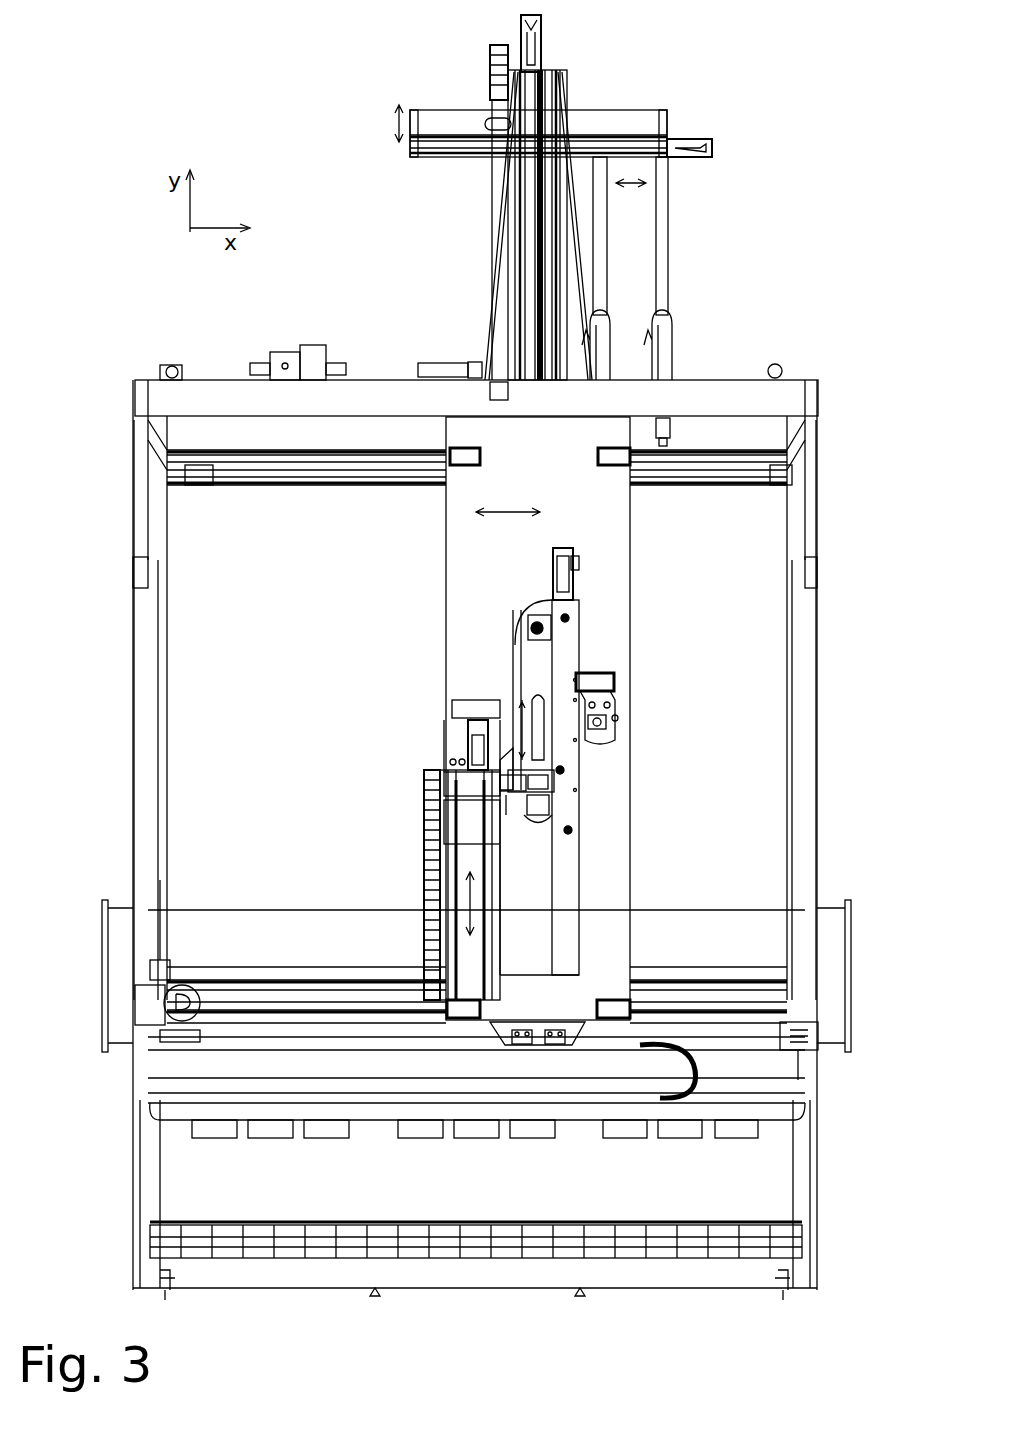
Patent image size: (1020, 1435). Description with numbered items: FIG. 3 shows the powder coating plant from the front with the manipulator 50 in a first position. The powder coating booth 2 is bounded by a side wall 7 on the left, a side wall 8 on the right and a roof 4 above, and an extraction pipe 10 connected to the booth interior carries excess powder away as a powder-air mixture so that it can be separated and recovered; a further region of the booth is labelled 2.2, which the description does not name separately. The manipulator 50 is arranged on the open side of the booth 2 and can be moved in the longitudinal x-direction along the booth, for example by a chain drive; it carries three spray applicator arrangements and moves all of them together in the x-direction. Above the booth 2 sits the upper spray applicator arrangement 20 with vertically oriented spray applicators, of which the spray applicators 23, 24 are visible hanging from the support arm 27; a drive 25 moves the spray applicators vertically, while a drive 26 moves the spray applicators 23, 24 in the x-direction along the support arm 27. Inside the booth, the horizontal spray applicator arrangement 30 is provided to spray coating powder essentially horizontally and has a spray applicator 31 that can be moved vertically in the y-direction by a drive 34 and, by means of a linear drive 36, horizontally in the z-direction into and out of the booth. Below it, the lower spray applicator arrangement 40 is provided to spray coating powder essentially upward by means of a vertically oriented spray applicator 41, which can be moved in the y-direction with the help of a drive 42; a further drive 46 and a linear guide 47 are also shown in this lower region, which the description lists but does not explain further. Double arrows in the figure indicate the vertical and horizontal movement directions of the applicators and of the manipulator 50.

The powder coating booth 2 is at (156, 296).
The working area 2.2 is at (200, 723).
The roof 4 is at (210, 376).
The side wall 7 is at (133, 650).
The side wall 8 is at (817, 650).
The extraction pipe 10 is at (106, 900).
The upper spray applicator arrangement 20 is at (465, 92).
The spray applicator 23 is at (607, 262).
The spray applicator 24 is at (670, 262).
The drive 25 is at (542, 24).
The drive 26 is at (712, 148).
The support arm 27 is at (668, 120).
The horizontal spray applicator arrangement 30 is at (605, 648).
The spray applicator 31 is at (527, 630).
The drive 34 is at (563, 548).
The linear drive 36 is at (600, 740).
The lower spray applicator arrangement 40 is at (418, 742).
The spray applicator 41 is at (532, 705).
The drive 42 is at (515, 722).
The drive 46 is at (462, 720).
The linear guide 47 is at (490, 905).
The manipulator 50 is at (652, 572).